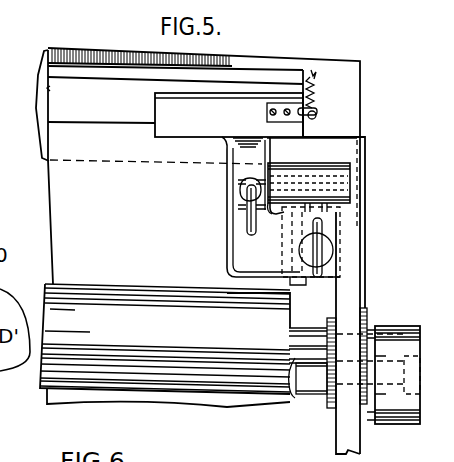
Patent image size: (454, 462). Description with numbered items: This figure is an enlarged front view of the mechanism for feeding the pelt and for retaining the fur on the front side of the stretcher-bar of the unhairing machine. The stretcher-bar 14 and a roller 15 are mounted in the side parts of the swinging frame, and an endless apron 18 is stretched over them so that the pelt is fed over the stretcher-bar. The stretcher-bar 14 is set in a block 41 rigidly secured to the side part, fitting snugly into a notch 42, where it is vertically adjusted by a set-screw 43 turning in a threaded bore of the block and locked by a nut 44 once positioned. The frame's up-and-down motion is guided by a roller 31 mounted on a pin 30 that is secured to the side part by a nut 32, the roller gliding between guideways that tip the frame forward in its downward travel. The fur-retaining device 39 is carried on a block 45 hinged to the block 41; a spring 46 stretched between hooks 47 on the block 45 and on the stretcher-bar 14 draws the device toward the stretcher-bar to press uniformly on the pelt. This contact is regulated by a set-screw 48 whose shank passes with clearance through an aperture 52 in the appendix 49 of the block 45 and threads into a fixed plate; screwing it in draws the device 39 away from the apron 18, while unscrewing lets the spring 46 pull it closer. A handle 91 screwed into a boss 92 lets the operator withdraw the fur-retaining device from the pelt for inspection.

The stretcher-bar 14 is at (40, 88).
The roller 15 is at (165, 339).
The endless apron 18 is at (168, 283).
The pin 30 is at (289, 395).
The roller 31 is at (399, 423).
The nut 32 is at (310, 392).
The fur-retaining device 39 is at (175, 103).
The block 41 is at (309, 187).
The notch 42 is at (360, 180).
The set-screw 43 is at (296, 280).
The nut 44 is at (271, 205).
The block 45 is at (229, 115).
The spring 46 is at (316, 96).
The hook 47 is at (316, 78).
The set-screw 48 is at (321, 242).
The appendix 49 is at (281, 207).
The aperture 52 is at (350, 333).
The handle 91 is at (248, 224).
The boss 92 is at (240, 182).